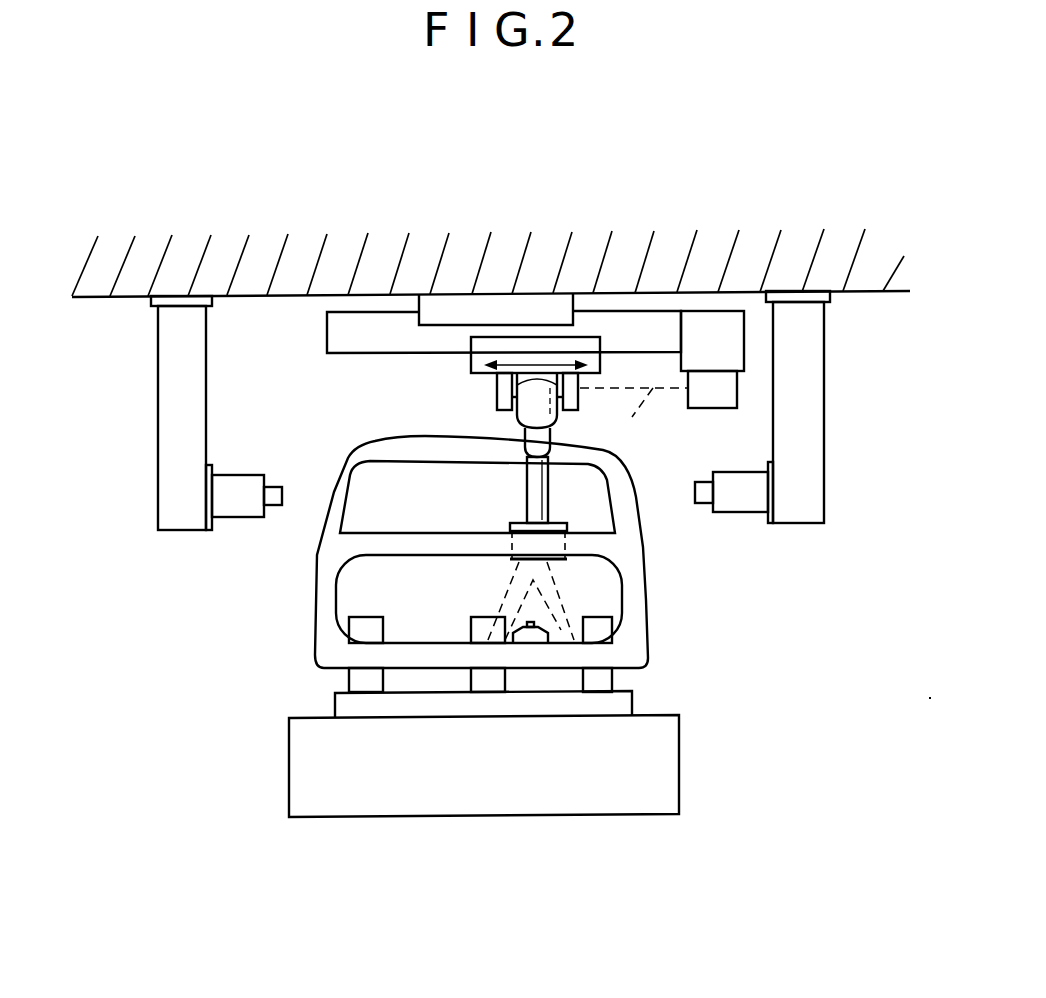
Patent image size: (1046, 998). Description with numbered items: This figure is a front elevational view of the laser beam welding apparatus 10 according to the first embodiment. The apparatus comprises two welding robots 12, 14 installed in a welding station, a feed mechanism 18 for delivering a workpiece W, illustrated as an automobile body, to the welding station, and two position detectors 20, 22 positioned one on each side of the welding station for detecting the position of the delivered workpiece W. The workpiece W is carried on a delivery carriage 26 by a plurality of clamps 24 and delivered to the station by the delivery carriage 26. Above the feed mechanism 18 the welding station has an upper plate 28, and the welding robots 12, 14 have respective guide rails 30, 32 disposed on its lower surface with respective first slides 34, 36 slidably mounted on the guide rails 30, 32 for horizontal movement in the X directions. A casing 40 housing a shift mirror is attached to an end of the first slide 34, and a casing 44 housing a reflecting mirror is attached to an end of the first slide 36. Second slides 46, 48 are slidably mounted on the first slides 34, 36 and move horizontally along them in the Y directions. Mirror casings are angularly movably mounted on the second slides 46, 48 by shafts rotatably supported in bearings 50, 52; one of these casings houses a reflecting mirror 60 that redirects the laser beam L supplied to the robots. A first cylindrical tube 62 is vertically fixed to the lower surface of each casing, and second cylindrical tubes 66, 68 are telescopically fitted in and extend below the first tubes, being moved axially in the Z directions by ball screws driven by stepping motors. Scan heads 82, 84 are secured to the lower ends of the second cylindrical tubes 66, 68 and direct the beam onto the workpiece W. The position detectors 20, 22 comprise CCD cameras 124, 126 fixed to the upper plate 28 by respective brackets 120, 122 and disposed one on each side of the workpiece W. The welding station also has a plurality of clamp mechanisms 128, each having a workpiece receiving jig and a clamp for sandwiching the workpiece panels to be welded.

The laser beam welding apparatus 10 is at (686, 208).
The welding robot 12 is at (560, 486).
The welding robot 14 is at (586, 486).
The feed mechanism 18 is at (607, 788).
The position detector 20 is at (181, 440).
The position detector 22 is at (803, 434).
The clamps 24 is at (350, 680).
The delivery carriage 26 is at (623, 702).
The upper plate 28 is at (866, 293).
The guide rail 30 is at (507, 249).
The guide rail 32 is at (517, 300).
The first slide 34 is at (458, 351).
The first slide 36 is at (344, 342).
The casing 40 is at (714, 386).
The casing 44 is at (705, 400).
The second slide 46 is at (476, 368).
The second slide 48 is at (481, 366).
The bearing 50 is at (642, 467).
The bearing 52 is at (560, 415).
The reflecting mirror 60 is at (477, 462).
The first cylindrical tube 62 is at (517, 440).
The second cylindrical tube 66 is at (647, 528).
The second cylindrical tube 68 is at (538, 487).
The scan head 82 is at (487, 584).
The scan head 84 is at (513, 561).
The bracket 120 is at (180, 364).
The bracket 122 is at (808, 398).
The CCD camera 124 is at (238, 505).
The CCD camera 126 is at (760, 492).
The clamp mechanism 128 is at (535, 634).
The workpiece W is at (323, 613).
The laser beam L is at (634, 416).